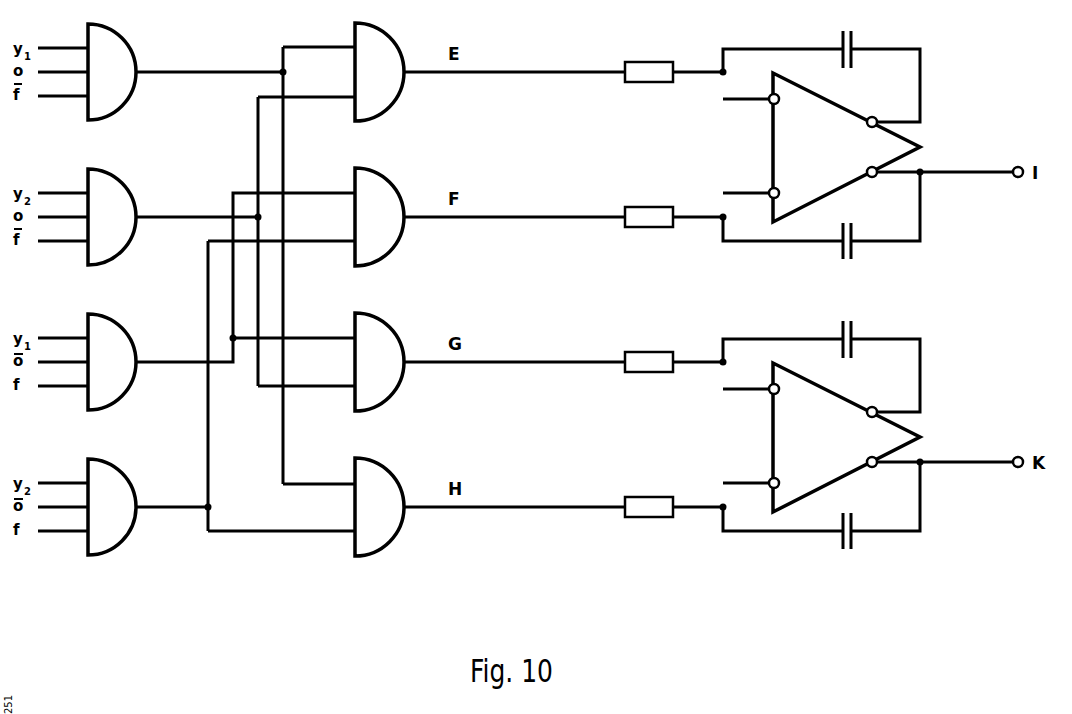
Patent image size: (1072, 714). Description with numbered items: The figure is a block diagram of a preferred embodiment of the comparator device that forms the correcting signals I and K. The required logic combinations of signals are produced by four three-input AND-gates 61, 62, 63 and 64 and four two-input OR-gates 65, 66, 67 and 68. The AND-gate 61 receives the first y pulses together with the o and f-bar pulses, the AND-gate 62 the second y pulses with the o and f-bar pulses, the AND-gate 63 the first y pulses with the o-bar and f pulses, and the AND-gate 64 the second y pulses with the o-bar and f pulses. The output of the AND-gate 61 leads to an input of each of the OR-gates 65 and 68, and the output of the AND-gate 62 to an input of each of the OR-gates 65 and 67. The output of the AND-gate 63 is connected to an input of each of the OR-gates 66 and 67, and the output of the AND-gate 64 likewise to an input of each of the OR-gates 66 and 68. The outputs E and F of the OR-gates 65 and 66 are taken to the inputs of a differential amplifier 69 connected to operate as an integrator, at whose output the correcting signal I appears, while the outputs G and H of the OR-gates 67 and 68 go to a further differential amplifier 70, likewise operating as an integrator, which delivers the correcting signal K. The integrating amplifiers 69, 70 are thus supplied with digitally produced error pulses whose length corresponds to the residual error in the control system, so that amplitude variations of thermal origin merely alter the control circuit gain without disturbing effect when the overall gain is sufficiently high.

The AND-gate 61 is at (114, 93).
The AND-gate 62 is at (114, 238).
The AND-gate 63 is at (114, 383).
The AND-gate 64 is at (114, 528).
The OR-gate 65 is at (383, 93).
The OR-gate 66 is at (383, 238).
The OR-gate 67 is at (383, 383).
The OR-gate 68 is at (383, 528).
The differential amplifier 69 is at (818, 175).
The further differential amplifier 70 is at (818, 465).